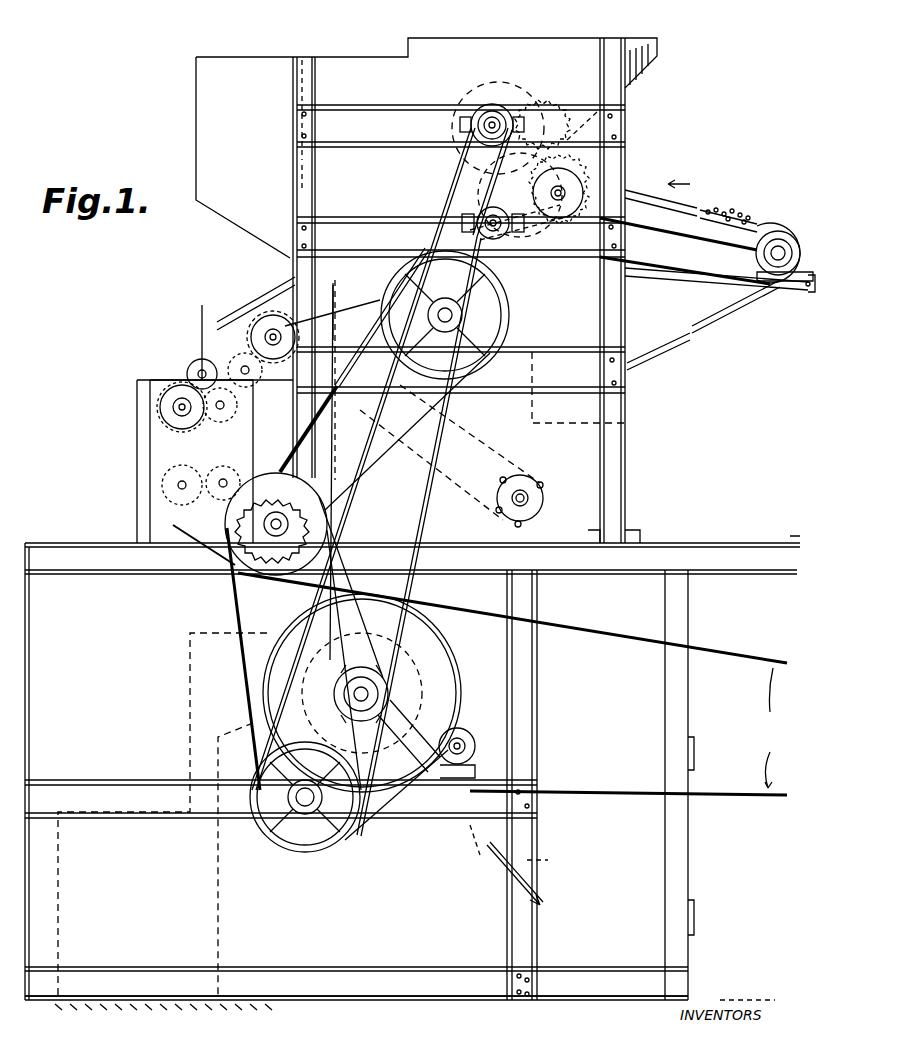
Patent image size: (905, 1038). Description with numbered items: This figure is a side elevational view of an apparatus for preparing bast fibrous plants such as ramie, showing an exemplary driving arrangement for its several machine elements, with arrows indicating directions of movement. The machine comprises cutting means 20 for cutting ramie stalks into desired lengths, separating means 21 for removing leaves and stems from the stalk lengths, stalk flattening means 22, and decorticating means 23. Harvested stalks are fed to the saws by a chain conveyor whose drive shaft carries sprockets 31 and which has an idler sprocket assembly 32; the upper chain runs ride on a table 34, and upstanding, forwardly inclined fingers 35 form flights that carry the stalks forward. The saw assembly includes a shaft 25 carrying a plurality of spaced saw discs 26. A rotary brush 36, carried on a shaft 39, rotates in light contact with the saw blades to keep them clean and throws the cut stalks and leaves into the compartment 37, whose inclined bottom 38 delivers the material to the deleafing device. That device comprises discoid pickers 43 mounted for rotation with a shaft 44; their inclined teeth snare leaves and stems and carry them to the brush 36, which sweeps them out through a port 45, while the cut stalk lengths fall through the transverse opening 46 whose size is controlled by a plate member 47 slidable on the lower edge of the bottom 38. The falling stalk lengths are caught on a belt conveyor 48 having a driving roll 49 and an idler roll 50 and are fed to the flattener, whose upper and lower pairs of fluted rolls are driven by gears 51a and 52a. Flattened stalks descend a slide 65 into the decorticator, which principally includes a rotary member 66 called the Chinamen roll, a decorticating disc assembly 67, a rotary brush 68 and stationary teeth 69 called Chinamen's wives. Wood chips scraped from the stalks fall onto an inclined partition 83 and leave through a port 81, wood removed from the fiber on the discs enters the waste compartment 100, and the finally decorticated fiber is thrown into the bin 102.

The cutting means 20 is at (536, 100).
The separating means 21 is at (522, 306).
The stalk flattening means 22 is at (130, 418).
The decorticating means 23 is at (462, 785).
The shaft 25 is at (492, 111).
The saw discs 26 is at (452, 96).
The sprockets 31 is at (529, 193).
The idler sprocket assembly 32 is at (780, 290).
The table 34 is at (672, 222).
The fingers 35 is at (658, 194).
The rotary brush 36 is at (518, 262).
The compartment 37 is at (352, 57).
The inclined bottom 38 is at (262, 226).
The shaft 39 is at (440, 204).
The discoid pickers 43 is at (495, 318).
The shaft 44 is at (445, 299).
The port 45 is at (628, 412).
The transverse opening 46 is at (354, 454).
The plate member 47 is at (300, 322).
The belt conveyor 48 is at (450, 457).
The driving roll 49 is at (317, 311).
The idler roll 50 is at (545, 511).
The gears 51a is at (201, 470).
The gears 52a is at (210, 535).
The slide 65 is at (512, 515).
The rotary member 66 is at (512, 795).
The decorticating disc assembly 67 is at (525, 694).
The rotary brush 68 is at (345, 838).
The stationary teeth 69 is at (478, 748).
The port 81 is at (529, 873).
The inclined partition 83 is at (466, 854).
The compartment 100 is at (162, 814).
The bin 102 is at (450, 1001).